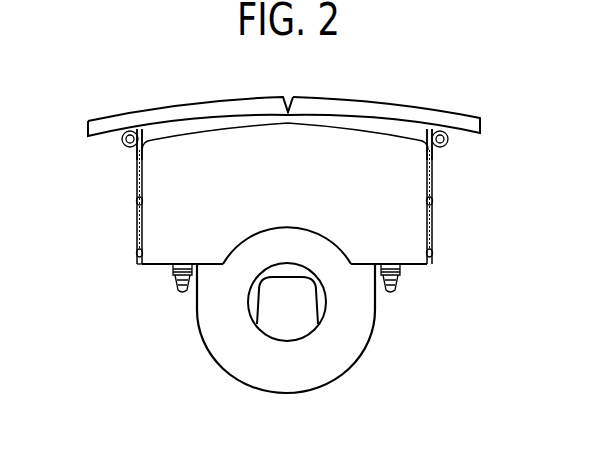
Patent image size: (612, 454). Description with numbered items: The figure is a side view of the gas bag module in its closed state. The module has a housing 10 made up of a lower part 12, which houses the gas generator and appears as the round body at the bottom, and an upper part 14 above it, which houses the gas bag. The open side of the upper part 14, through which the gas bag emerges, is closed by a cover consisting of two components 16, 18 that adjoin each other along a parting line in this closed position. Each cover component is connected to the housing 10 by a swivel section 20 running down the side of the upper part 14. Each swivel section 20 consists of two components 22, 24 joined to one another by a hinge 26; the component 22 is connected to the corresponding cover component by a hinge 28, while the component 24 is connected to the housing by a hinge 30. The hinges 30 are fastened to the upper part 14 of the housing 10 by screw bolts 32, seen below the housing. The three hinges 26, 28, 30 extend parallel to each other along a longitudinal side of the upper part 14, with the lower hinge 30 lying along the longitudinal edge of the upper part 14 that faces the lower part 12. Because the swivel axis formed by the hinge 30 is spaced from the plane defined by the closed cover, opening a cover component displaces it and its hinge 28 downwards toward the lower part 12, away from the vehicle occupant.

The housing 10 is at (125, 272).
The lower part 12 is at (343, 347).
The upper part 14 is at (402, 252).
The cover component 16 is at (191, 106).
The cover component 18 is at (375, 109).
The swivel section 20 is at (128, 172).
The swivel section component 22 is at (134, 155).
The swivel section component 24 is at (136, 218).
The hinge 26 is at (136, 202).
The hinge 28 is at (130, 131).
The hinge 30 is at (136, 252).
The screw bolt 32 is at (177, 284).